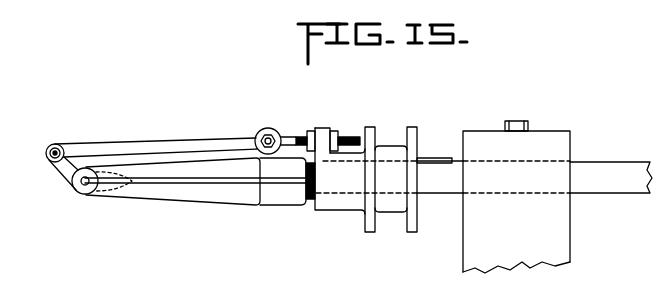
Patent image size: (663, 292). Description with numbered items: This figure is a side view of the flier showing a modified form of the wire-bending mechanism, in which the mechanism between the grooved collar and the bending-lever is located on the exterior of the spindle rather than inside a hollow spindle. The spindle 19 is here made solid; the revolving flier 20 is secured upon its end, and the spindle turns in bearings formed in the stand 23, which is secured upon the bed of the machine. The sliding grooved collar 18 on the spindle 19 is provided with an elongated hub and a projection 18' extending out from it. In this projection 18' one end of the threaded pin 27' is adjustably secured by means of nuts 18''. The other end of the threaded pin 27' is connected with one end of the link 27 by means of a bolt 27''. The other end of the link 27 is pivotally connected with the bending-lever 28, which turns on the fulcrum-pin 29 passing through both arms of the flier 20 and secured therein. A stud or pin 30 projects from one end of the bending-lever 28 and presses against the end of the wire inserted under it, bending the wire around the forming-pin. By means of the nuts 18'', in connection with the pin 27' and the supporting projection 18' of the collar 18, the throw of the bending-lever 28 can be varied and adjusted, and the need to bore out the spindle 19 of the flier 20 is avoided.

The sliding grooved collar 18 is at (438, 186).
The projection of the grooved collar 18' is at (329, 122).
The nuts 18'' is at (349, 109).
The spindle 19 is at (611, 182).
The revolving flier 20 is at (195, 181).
The stand 23 is at (516, 197).
The link 27 is at (156, 142).
The threaded pin 27' is at (317, 123).
The bolt 27'' is at (256, 128).
The bending-lever 28 is at (60, 167).
The fulcrum-pin 29 is at (83, 191).
The stud or pin 30 is at (123, 180).